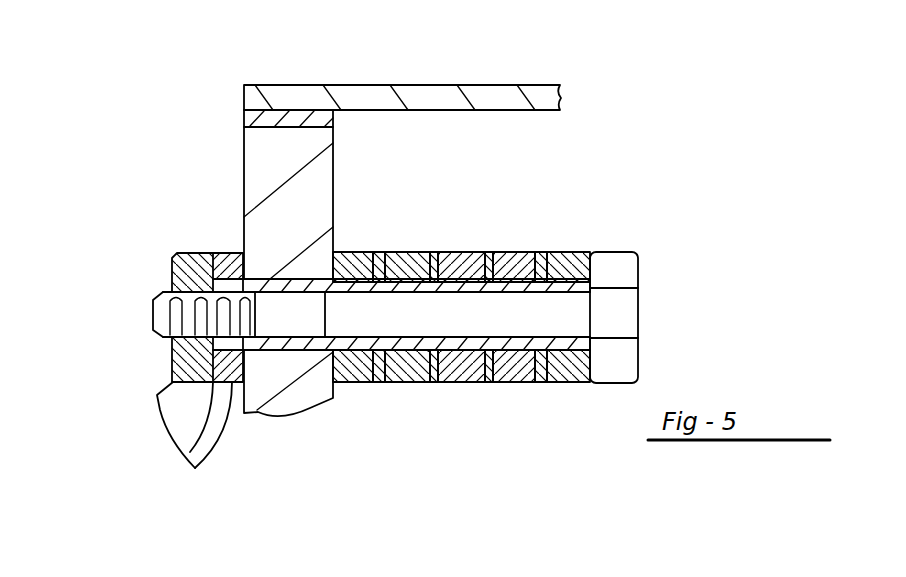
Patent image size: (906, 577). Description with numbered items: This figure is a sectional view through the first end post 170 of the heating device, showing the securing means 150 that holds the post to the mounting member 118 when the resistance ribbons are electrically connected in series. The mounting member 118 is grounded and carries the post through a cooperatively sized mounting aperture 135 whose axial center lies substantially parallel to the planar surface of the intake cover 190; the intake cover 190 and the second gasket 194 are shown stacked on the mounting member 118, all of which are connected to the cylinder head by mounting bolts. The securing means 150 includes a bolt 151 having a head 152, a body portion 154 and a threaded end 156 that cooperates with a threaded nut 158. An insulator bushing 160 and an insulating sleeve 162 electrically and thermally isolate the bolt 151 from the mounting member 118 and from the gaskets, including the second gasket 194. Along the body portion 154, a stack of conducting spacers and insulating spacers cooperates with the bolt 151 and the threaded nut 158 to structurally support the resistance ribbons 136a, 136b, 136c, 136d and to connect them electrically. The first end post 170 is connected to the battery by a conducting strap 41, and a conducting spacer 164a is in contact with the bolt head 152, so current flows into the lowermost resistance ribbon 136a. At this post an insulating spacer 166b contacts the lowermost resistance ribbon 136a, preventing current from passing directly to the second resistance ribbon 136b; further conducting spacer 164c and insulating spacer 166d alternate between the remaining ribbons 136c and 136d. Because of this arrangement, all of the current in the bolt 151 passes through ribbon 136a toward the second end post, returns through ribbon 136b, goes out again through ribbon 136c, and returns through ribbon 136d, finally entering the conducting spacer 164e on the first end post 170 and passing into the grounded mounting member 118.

The flange 41 is at (173, 412).
The mounting member 118 is at (248, 145).
The mounting apertures 135 is at (347, 252).
The lowermost resistance ribbon 136a is at (545, 252).
The second resistance ribbon 136b is at (487, 252).
The resistance ribbon 136c is at (435, 252).
The resistance ribbon 136d is at (380, 252).
The securing means 150 is at (172, 240).
The bolt 151 is at (668, 332).
The head 152 is at (628, 268).
The body portion 154 is at (518, 252).
The threaded end 156 is at (163, 291).
The threaded nut 158 is at (175, 348).
The insulator bushing 160 is at (233, 253).
The insulating sleeve 162 is at (590, 252).
The conducting spacer 164a is at (572, 382).
The conducting spacer 164c is at (455, 382).
The conducting spacer 164e is at (350, 382).
The insulating spacer 166b is at (508, 382).
The insulating spacer 166d is at (402, 382).
The first end post 170 is at (128, 313).
The intake cover 190 is at (505, 97).
The second gasket 194 is at (243, 117).